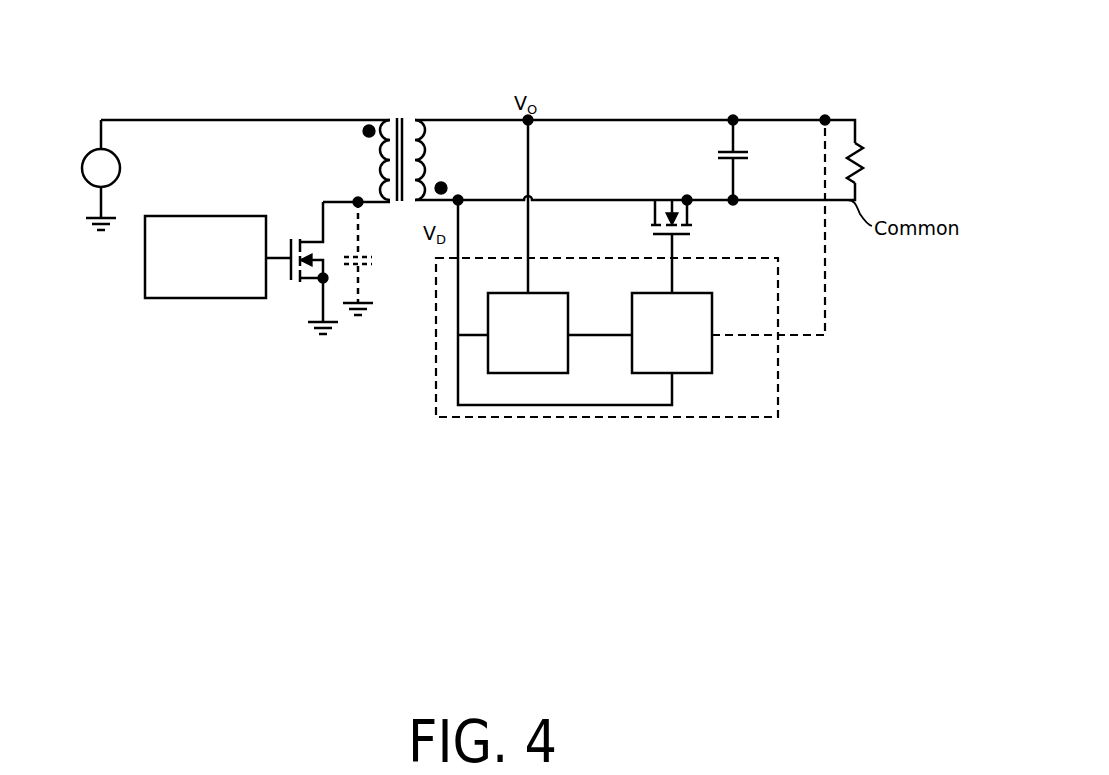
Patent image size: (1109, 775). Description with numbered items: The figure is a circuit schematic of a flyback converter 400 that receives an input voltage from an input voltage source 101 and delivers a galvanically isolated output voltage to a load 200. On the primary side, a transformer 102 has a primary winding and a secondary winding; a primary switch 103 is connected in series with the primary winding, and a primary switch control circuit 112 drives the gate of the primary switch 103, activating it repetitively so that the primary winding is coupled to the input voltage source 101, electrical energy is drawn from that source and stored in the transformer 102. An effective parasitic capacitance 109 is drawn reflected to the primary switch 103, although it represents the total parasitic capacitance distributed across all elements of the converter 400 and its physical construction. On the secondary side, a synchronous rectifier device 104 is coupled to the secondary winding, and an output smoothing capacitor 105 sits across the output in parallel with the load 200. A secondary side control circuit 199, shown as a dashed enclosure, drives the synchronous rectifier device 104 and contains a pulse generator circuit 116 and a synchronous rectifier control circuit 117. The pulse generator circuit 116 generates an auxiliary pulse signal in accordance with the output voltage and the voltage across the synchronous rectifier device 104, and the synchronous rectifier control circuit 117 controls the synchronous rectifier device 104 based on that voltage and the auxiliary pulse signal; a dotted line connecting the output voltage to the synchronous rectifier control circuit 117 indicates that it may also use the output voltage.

The flyback converter 400 is at (276, 99).
The input voltage source 101 is at (119, 171).
The primary switch control circuit 112 is at (204, 216).
The primary switch 103 is at (304, 237).
The parasitic capacitance 109 is at (370, 266).
The transformer 102 is at (400, 111).
The synchronous rectifier device 104 is at (663, 190).
The output smoothing capacitor 105 is at (749, 155).
The load 200 is at (860, 142).
The pulse generator circuit 116 is at (570, 297).
The synchronous rectifier control circuit 117 is at (712, 297).
The secondary side control circuit 199 is at (778, 385).